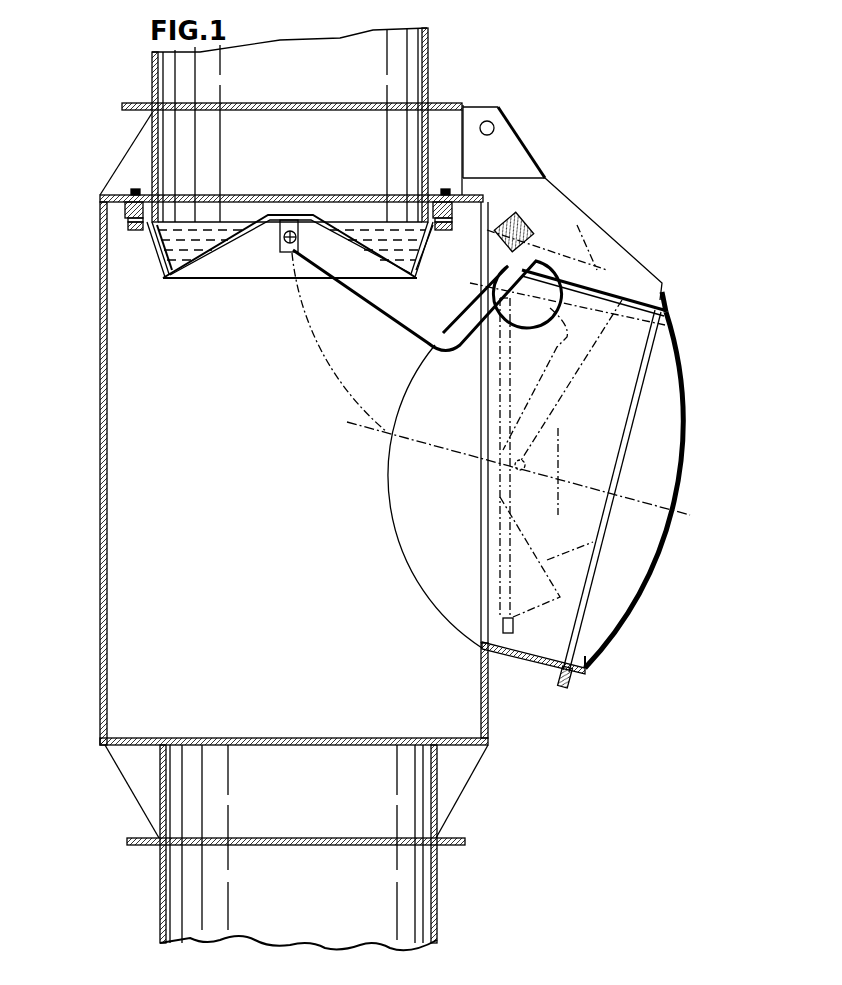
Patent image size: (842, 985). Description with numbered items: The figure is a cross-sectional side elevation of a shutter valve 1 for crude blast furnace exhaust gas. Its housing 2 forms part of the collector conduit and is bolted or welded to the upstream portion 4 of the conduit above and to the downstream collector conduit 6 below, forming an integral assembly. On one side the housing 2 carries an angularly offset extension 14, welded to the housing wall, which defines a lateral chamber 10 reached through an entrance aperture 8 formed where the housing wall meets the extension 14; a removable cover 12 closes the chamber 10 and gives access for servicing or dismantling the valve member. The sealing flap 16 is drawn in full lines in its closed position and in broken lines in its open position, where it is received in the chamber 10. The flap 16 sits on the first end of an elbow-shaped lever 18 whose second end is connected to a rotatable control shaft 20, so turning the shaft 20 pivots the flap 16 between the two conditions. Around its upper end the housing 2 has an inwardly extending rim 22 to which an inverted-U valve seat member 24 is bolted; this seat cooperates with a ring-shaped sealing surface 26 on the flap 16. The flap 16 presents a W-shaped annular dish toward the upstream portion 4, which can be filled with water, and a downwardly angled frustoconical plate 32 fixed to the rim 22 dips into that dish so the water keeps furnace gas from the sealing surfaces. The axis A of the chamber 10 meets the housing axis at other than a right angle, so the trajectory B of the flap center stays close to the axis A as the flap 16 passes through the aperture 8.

The valve 1 is at (103, 392).
The housing 2 is at (170, 444).
The upstream portion of the collector conduit 4 is at (428, 66).
The downstream collector conduit 6 is at (437, 903).
The entrance aperture 8 is at (425, 558).
The lateral chamber 10 is at (550, 640).
The removable cover 12 is at (620, 627).
The extension 14 is at (517, 658).
The sealing flap 16 is at (240, 265).
The lever 18 is at (372, 290).
The control shaft 20 is at (530, 227).
The rim 22 is at (137, 190).
The valve seat member 24 is at (125, 213).
The sealing surface 26 is at (141, 232).
The frustoconical plate 32 is at (180, 222).
The axis of chamber A is at (632, 493).
The trajectory of the center of flap B is at (338, 378).